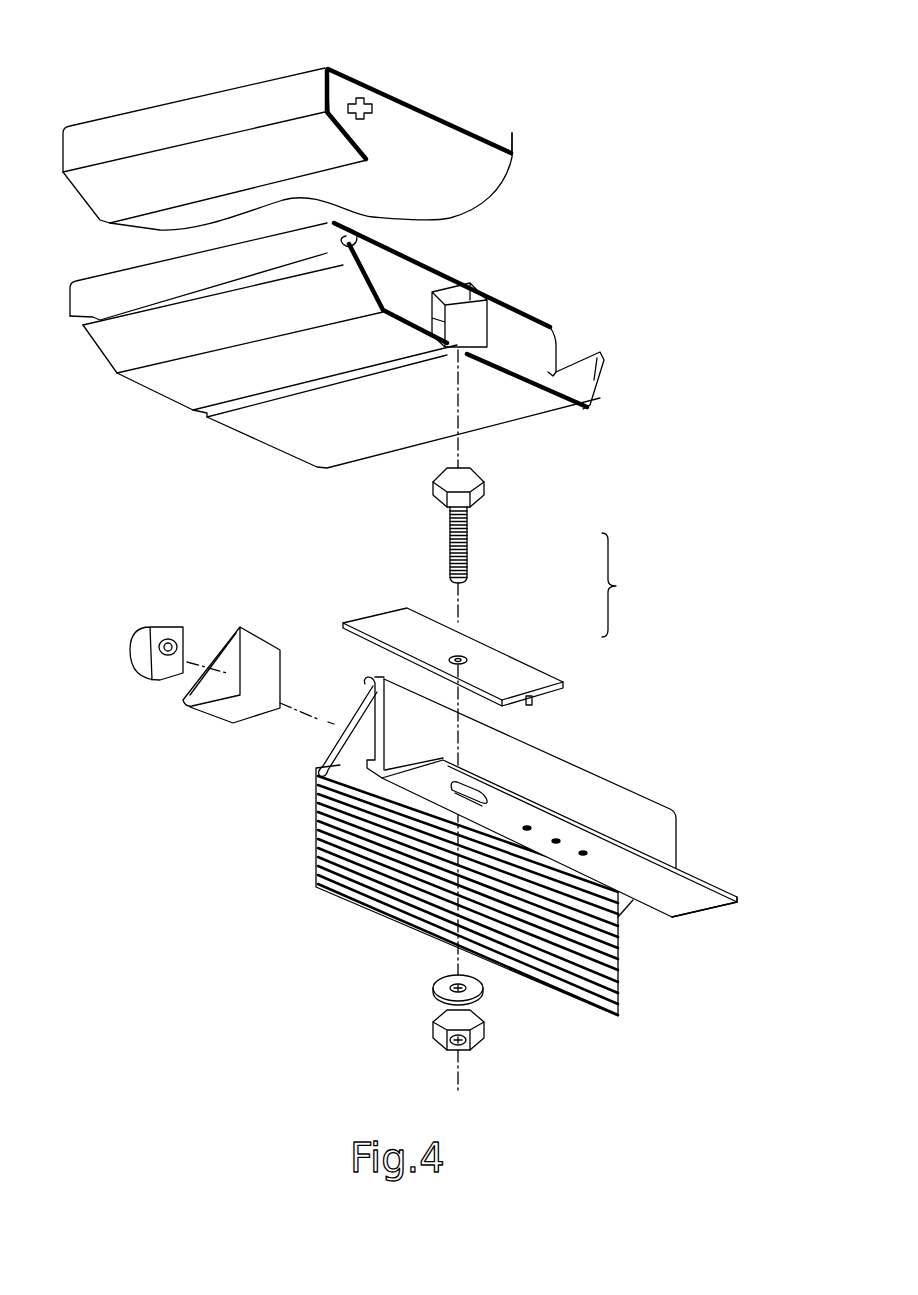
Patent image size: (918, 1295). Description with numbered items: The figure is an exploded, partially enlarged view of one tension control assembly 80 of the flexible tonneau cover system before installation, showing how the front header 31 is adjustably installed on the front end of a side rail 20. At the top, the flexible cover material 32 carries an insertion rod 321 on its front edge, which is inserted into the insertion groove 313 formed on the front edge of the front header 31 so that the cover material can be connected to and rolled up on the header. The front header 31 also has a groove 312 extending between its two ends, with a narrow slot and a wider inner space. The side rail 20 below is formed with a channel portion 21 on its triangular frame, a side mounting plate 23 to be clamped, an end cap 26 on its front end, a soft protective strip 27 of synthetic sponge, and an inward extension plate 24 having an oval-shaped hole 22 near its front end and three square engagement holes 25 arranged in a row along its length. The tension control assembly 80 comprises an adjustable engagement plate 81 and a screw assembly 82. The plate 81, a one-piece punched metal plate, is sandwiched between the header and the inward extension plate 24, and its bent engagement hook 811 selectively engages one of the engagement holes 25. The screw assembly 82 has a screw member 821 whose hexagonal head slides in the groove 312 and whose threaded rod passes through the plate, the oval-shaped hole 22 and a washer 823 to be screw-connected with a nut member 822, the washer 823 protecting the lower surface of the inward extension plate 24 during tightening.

The side rail 20 is at (427, 789).
The channel portion 21 is at (357, 720).
The oval-shaped hole 22 is at (487, 800).
The side mounting plate 23 is at (316, 830).
The inward extension plate 24 is at (687, 897).
The engagement holes 25 is at (530, 826).
The end cap 26 is at (238, 637).
The soft protective strip 27 is at (147, 638).
The front header 31 is at (533, 312).
The groove 312 is at (482, 297).
The insertion groove 313 is at (352, 240).
The flexible cover material 32 is at (432, 112).
The insertion rod 321 is at (360, 98).
The tension control assembly 80 is at (629, 585).
The adjustable engagement plate 81 is at (499, 641).
The engagement hook 811 is at (540, 700).
The screw assembly 82 is at (512, 511).
The screw member 821 is at (482, 485).
The nut member 822 is at (433, 1033).
The washer 823 is at (440, 992).